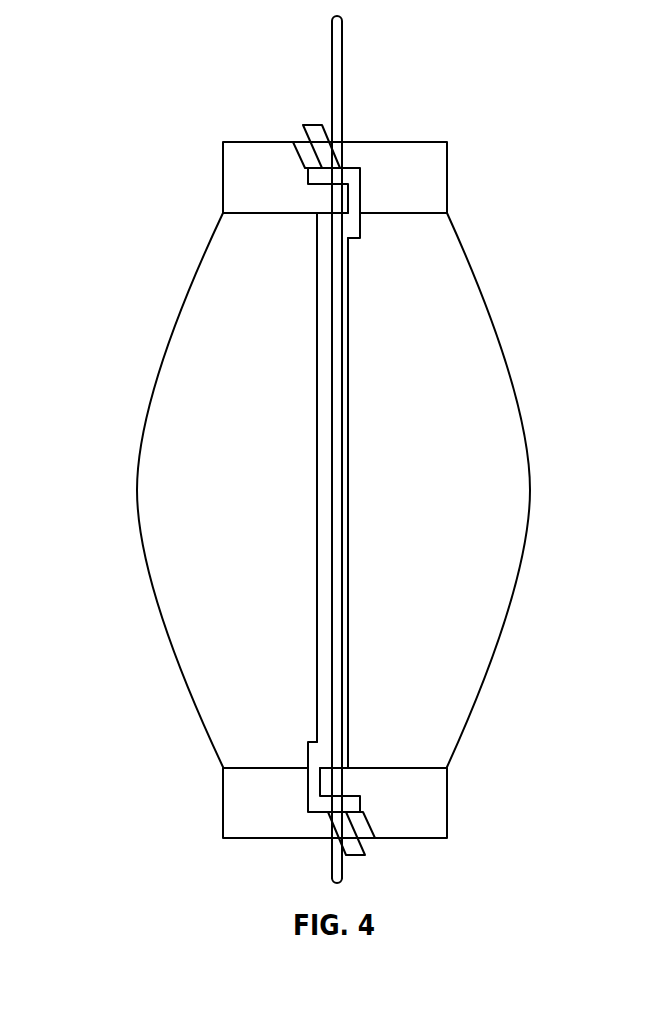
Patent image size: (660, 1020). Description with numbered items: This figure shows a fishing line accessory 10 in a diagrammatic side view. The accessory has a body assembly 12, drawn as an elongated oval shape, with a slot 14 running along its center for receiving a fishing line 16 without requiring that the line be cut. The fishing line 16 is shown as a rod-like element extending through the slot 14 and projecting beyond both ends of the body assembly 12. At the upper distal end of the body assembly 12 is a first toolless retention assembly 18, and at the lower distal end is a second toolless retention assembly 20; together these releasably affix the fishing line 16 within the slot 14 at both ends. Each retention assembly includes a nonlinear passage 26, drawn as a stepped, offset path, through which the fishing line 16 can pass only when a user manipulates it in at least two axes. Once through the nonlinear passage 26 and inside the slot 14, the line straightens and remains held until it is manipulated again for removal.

The fishing line accessory 10 is at (74, 75).
The body assembly 12 is at (333, 490).
The slot 14 is at (347, 493).
The fishing line 16 is at (342, 89).
The toolless retention assembly 18 is at (245, 173).
The toolless retention assembly 20 is at (262, 805).
The nonlinear passage 26 is at (358, 228).